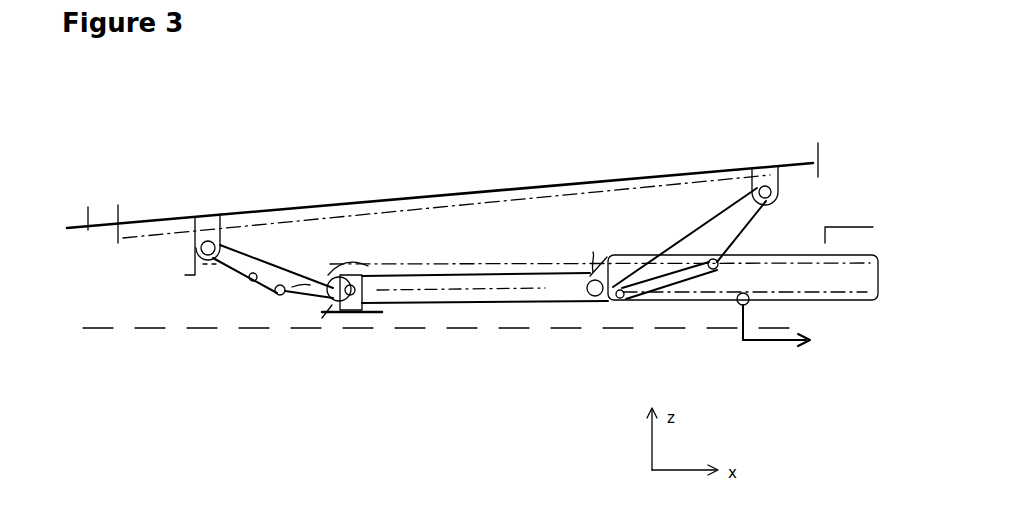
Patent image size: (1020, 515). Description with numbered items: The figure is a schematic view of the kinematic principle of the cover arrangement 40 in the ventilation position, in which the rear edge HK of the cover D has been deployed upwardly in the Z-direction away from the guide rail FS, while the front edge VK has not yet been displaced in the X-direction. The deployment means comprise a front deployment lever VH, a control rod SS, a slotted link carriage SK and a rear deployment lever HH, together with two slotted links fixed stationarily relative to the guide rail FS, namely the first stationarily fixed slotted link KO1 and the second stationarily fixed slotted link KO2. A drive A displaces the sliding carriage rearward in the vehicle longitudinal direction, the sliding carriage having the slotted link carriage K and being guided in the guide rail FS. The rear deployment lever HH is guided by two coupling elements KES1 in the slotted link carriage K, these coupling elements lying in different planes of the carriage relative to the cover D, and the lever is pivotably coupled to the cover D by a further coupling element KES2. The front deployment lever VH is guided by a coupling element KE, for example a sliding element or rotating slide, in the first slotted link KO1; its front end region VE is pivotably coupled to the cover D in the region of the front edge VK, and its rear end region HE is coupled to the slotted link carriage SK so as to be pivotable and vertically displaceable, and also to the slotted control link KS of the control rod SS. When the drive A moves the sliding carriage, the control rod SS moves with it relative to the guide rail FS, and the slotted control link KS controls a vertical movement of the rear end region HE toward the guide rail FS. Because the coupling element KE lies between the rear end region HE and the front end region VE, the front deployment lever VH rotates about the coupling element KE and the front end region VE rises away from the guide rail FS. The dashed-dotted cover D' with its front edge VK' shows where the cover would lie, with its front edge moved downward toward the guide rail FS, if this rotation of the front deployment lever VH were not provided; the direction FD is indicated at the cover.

The flap arrangement 40 is at (786, 60).
The cover D is at (440, 182).
The cover (dashed-dotted view) D' is at (446, 188).
The flap direction reference FD is at (845, 204).
The front edge VK is at (132, 208).
The front edge (dashed-dotted view) VK' is at (95, 284).
The guide rail FS is at (98, 330).
The front end region VE is at (185, 257).
The front deployment lever VH is at (250, 281).
The coupling element KE is at (276, 296).
The rear end region HE is at (335, 311).
The slotted link carriage SK is at (350, 319).
The control rod SS is at (497, 308).
The slotted control link KS is at (425, 294).
The first stationarily fixed slotted link KO1 is at (415, 263).
The second stationarily fixed slotted link KO2 is at (677, 298).
The slotted link carriage K is at (802, 282).
The coupling elements KES1 is at (622, 300).
The rear deployment lever HH is at (706, 234).
The further coupling element KES2 is at (764, 188).
The rear edge HK is at (828, 145).
The drive A is at (766, 348).